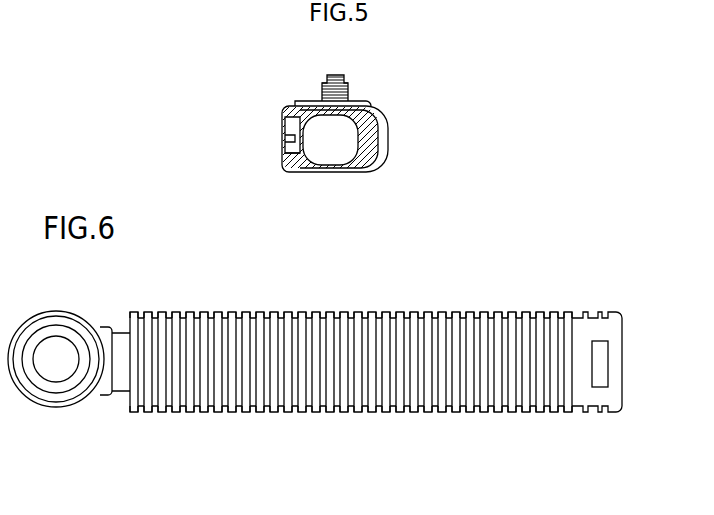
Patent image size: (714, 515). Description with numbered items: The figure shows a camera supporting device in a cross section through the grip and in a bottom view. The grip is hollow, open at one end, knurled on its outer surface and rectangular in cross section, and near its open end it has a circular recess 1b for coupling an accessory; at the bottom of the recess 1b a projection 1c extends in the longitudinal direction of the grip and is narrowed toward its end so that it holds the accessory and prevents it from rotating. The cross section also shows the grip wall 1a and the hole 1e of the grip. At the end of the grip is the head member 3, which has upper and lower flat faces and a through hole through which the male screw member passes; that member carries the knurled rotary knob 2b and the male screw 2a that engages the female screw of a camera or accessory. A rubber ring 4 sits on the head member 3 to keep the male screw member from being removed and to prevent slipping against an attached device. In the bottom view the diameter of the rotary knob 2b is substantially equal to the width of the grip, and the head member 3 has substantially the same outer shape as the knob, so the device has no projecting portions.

In FIG. 5, the rubber body / bellows boot 1a is at (295, 152).
In FIG. 6, the rubber body / bellows boot 1a is at (318, 315).
In FIG. 5, the circular recess 1b is at (293, 162).
In FIG. 5, the projection 1c is at (293, 137).
In FIG. 5, the through hole 1e is at (352, 139).
In FIG. 5, the male screw 2a is at (347, 92).
In FIG. 6, the rotary knob 2b is at (65, 408).
In FIG. 6, the head member 3 is at (115, 397).
In FIG. 5, the rubber ring 4 is at (308, 104).